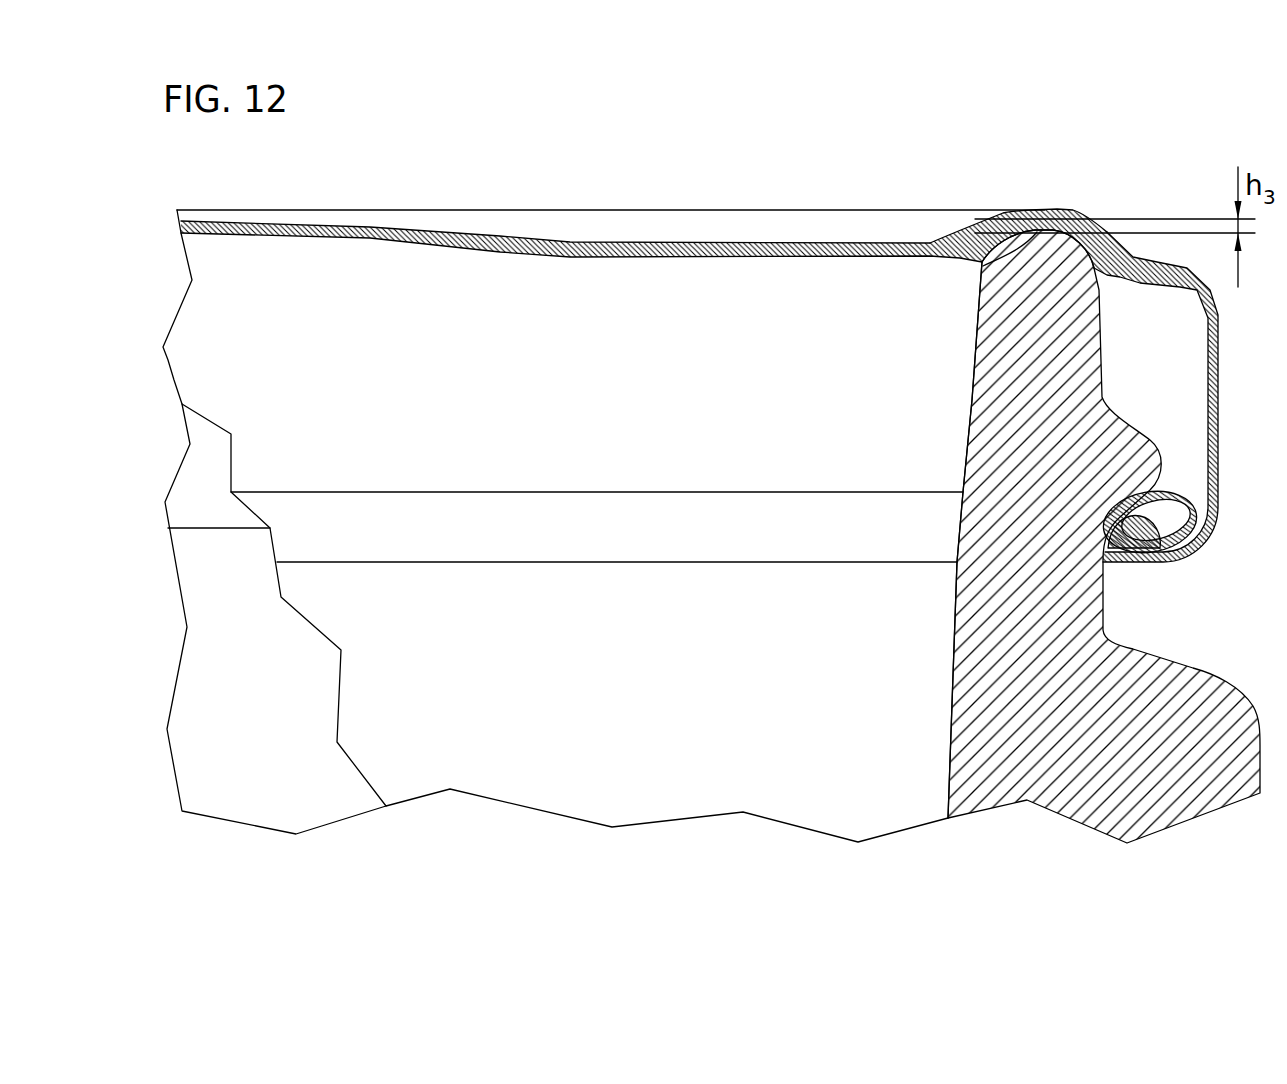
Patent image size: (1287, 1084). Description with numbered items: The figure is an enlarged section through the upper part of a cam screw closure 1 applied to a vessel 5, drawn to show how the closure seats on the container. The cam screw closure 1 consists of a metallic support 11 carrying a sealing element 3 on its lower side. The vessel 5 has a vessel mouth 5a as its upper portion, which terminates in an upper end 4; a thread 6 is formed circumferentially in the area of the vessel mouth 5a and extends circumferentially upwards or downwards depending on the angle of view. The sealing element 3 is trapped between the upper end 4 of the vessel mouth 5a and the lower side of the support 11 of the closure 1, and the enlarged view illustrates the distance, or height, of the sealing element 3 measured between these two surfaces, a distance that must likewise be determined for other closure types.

The cam screw closure 1 is at (566, 188).
The metallic support 11 is at (851, 230).
The sealing element 3 is at (965, 248).
The upper end of vessel mouth 4 is at (983, 266).
The vessel 5 is at (1210, 849).
The vessel mouth 5a is at (992, 374).
The thread 6 is at (1147, 462).